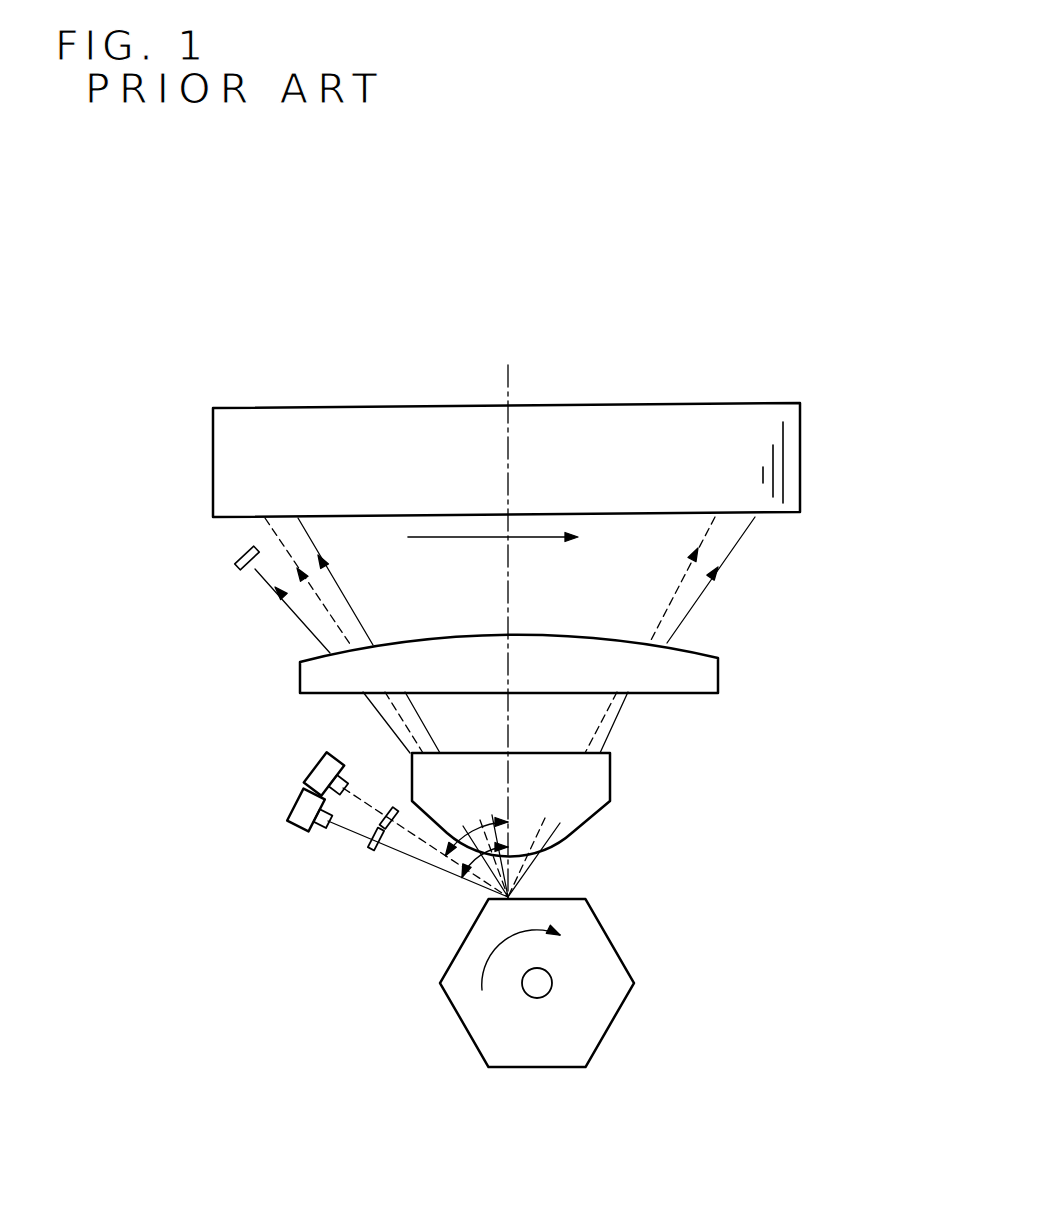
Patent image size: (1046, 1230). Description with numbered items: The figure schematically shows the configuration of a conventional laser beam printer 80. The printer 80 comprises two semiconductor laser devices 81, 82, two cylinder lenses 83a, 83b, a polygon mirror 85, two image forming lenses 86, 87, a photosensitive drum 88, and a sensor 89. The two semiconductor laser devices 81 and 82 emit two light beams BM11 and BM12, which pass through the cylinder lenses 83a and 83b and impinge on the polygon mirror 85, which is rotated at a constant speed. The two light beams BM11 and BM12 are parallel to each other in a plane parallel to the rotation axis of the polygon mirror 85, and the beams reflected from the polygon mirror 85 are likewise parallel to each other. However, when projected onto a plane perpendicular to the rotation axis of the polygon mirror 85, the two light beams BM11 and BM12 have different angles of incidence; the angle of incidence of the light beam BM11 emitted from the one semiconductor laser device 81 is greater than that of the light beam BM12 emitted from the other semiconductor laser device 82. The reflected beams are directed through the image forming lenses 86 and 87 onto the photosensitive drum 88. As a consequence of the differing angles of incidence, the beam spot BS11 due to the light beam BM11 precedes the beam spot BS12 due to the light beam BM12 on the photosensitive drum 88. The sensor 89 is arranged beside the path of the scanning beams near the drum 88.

The laser beam printer 80 is at (320, 291).
The semiconductor laser device 81 is at (291, 800).
The semiconductor laser device 82 is at (302, 767).
The cylinder lens 83a is at (375, 849).
The cylinder lens 83b is at (393, 806).
The polygon mirror 85 is at (606, 935).
The image forming lens 86 is at (612, 778).
The image forming lens 87 is at (720, 672).
The photosensitive drum 88 is at (660, 405).
The sensor 89 is at (237, 566).
The light beam BM11 is at (347, 868).
The light beam BM12 is at (352, 833).
The beam spot BS11 is at (298, 518).
The beam spot BS12 is at (260, 519).